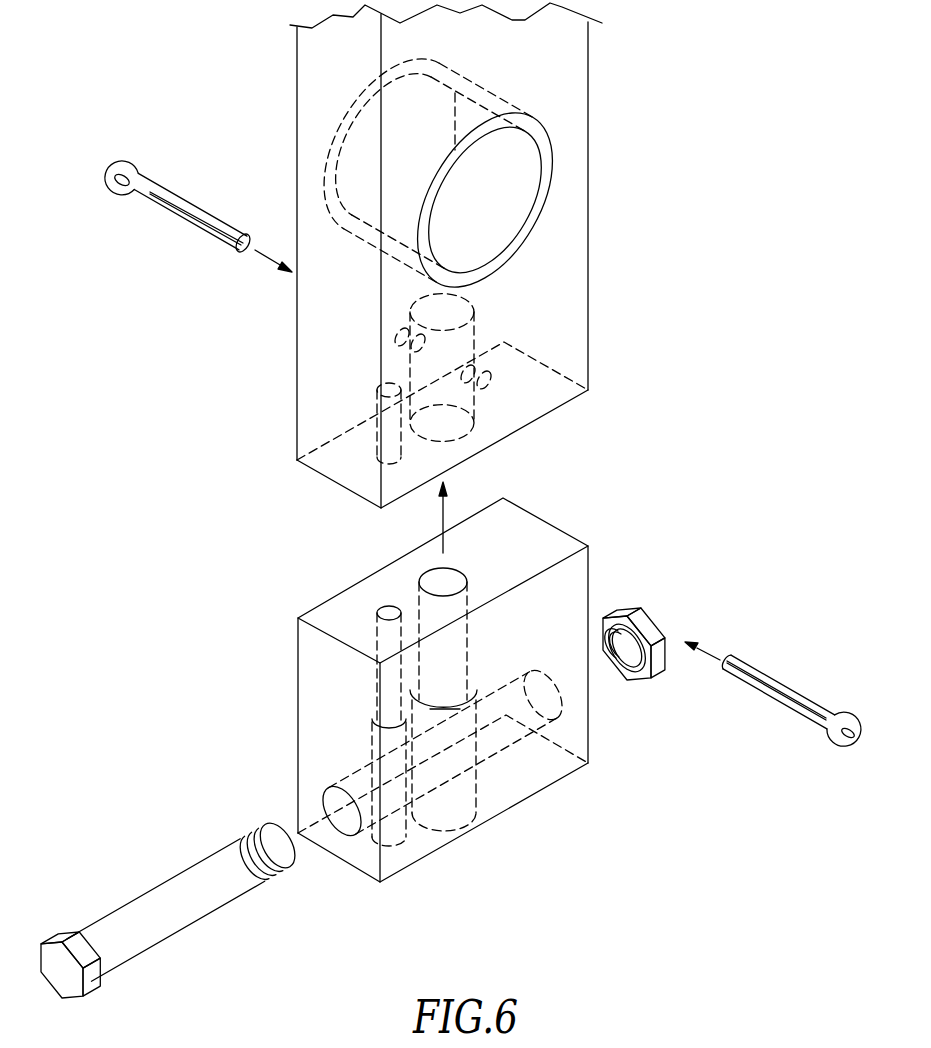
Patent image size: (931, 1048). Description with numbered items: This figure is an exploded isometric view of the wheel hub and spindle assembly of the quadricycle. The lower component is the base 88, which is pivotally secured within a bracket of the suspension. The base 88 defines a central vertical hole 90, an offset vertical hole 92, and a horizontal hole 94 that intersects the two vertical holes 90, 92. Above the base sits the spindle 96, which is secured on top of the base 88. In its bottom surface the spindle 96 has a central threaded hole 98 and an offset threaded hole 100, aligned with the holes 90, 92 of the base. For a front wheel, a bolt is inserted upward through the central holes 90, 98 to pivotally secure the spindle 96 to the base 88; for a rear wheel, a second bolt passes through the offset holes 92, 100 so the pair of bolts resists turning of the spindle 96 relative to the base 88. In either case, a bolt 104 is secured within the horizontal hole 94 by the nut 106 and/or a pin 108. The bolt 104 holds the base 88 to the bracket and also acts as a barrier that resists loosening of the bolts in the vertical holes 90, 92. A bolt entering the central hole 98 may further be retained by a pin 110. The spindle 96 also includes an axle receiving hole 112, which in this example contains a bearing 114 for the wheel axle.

The base 88 is at (305, 663).
The central vertical hole 90 is at (432, 578).
The offset vertical hole 92 is at (388, 608).
The horizontal hole 94 is at (323, 801).
The spindle 96 is at (297, 80).
The central threaded hole 98 is at (470, 430).
The offset threaded hole 100 is at (378, 400).
The bolt 104 is at (163, 898).
The nut 106 is at (637, 612).
The pin 108 is at (770, 683).
The pin 110 is at (190, 210).
The axle receiving hole 112 is at (510, 218).
The bearing 114 is at (543, 183).